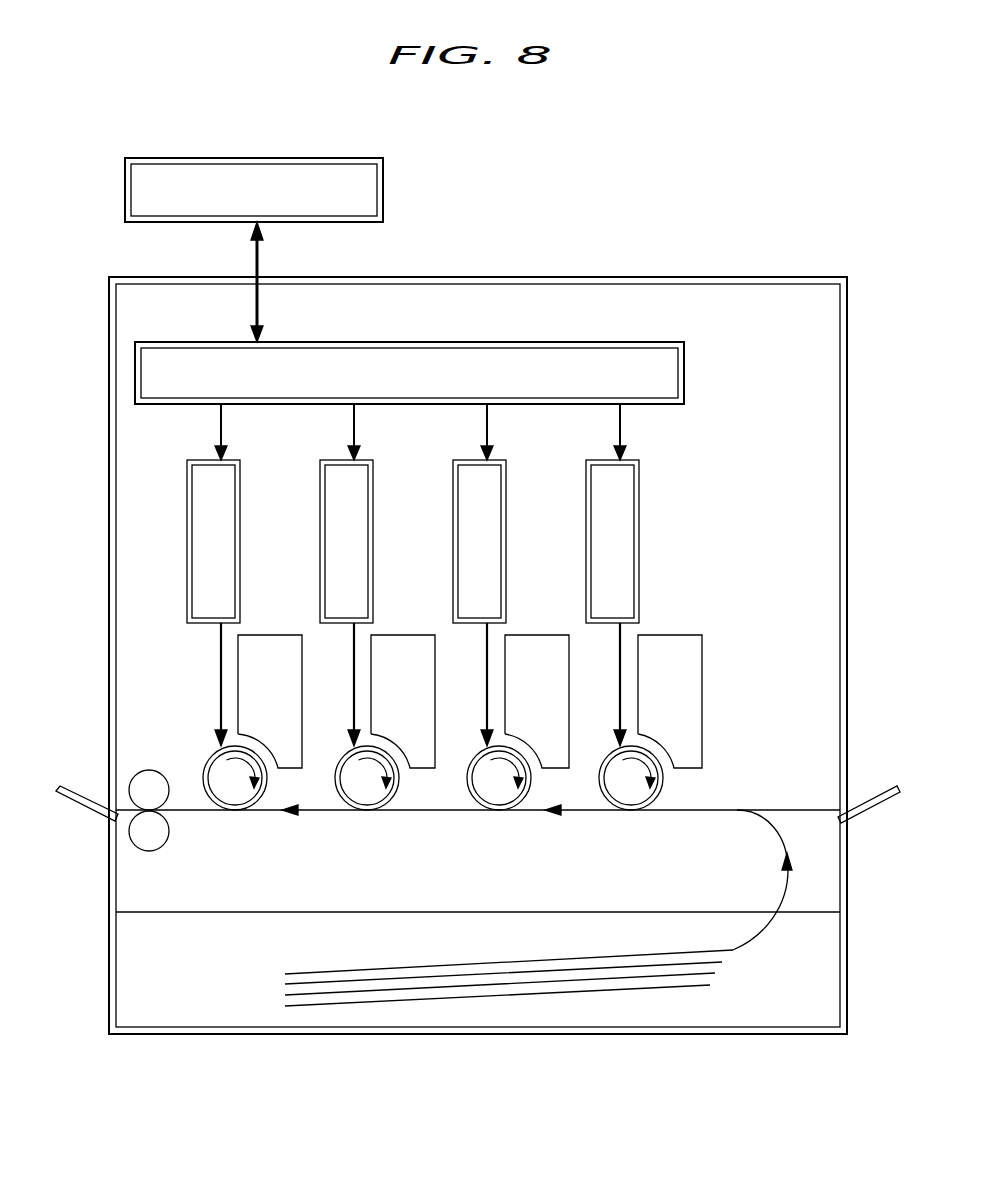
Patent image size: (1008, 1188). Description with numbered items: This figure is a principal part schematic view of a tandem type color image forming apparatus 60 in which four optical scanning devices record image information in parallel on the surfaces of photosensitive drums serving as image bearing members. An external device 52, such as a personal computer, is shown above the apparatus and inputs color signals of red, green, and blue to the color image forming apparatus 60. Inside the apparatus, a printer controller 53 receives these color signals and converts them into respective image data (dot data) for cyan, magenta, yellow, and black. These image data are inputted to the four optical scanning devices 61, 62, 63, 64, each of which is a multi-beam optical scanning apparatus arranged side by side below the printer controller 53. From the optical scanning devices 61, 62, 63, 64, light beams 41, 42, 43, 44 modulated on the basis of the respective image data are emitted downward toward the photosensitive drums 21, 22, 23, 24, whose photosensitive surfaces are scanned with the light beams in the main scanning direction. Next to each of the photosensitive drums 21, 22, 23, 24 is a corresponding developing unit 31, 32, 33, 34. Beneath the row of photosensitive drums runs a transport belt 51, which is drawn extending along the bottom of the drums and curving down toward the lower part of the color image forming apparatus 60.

The photosensitive drum 21 is at (232, 802).
The photosensitive drum 22 is at (364, 802).
The photosensitive drum 23 is at (496, 802).
The photosensitive drum 24 is at (628, 802).
The developing unit 31 is at (272, 646).
The developing unit 32 is at (405, 646).
The developing unit 33 is at (539, 646).
The developing unit 34 is at (672, 646).
The light beam 41 is at (204, 684).
The light beam 42 is at (337, 684).
The light beam 43 is at (470, 684).
The light beam 44 is at (603, 684).
The transport belt 51 is at (766, 806).
The external device 52 is at (384, 184).
The printer controller 53 is at (685, 372).
The color image forming apparatus 60 is at (745, 264).
The optical scanning device 61 is at (199, 505).
The optical scanning device 62 is at (332, 505).
The optical scanning device 63 is at (465, 505).
The optical scanning device 64 is at (598, 505).